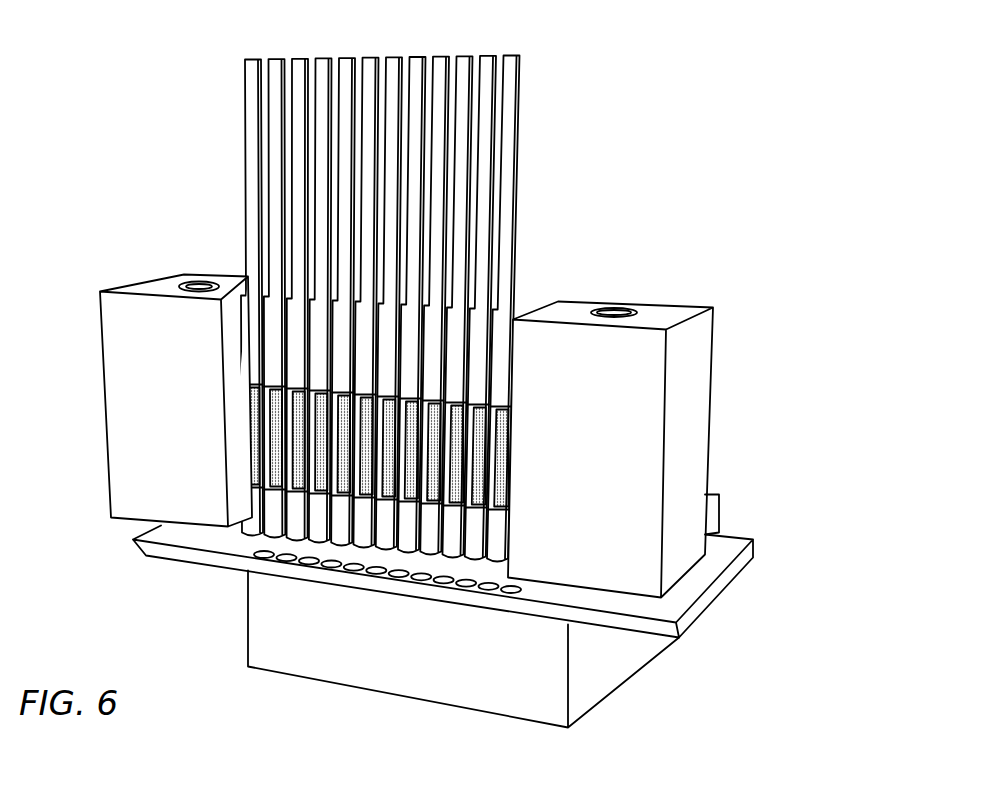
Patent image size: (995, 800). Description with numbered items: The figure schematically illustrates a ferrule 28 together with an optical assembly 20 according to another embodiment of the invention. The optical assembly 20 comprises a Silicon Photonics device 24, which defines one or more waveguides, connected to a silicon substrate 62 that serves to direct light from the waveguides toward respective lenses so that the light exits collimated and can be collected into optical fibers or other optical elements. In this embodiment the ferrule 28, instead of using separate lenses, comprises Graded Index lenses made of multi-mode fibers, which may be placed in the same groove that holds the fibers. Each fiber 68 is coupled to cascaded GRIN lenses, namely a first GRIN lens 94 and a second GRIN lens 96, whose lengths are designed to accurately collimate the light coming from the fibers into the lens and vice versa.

The optical assembly 20 is at (768, 536).
The Silicon Photonics device 24 is at (598, 688).
The ferrule 28 is at (652, 437).
The silicon substrate 62 is at (698, 612).
The fiber 68 is at (300, 60).
The first GRIN lens 94 is at (255, 453).
The second GRIN lens 96 is at (310, 524).